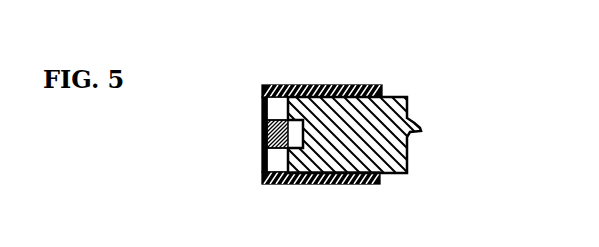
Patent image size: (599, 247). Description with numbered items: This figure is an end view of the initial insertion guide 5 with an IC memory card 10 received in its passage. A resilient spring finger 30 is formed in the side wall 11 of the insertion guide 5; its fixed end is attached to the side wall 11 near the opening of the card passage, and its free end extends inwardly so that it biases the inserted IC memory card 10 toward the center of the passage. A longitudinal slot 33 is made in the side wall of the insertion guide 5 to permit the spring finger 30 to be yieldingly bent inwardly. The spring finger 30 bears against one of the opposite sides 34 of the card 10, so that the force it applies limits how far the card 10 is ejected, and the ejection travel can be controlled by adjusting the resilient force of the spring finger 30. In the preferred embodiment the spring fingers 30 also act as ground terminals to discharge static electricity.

The initial insertion guide 5 is at (367, 100).
The IC memory card 10 is at (407, 117).
The side wall 11 is at (282, 156).
The resilient spring finger 30 is at (262, 135).
The longitudinal slot 33 is at (262, 113).
The opposite side of the card 34 is at (286, 85).